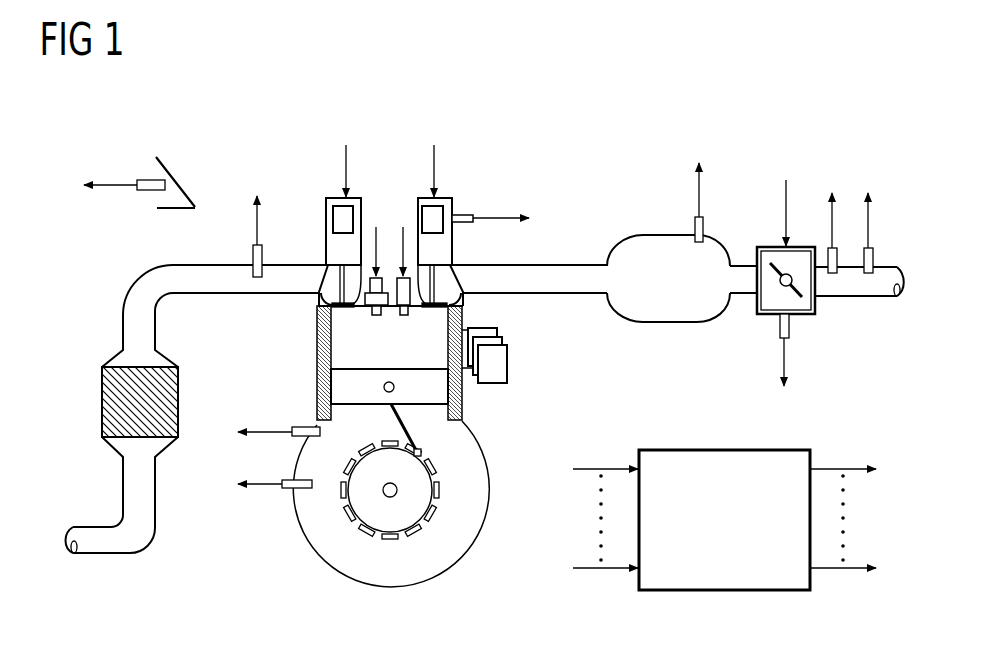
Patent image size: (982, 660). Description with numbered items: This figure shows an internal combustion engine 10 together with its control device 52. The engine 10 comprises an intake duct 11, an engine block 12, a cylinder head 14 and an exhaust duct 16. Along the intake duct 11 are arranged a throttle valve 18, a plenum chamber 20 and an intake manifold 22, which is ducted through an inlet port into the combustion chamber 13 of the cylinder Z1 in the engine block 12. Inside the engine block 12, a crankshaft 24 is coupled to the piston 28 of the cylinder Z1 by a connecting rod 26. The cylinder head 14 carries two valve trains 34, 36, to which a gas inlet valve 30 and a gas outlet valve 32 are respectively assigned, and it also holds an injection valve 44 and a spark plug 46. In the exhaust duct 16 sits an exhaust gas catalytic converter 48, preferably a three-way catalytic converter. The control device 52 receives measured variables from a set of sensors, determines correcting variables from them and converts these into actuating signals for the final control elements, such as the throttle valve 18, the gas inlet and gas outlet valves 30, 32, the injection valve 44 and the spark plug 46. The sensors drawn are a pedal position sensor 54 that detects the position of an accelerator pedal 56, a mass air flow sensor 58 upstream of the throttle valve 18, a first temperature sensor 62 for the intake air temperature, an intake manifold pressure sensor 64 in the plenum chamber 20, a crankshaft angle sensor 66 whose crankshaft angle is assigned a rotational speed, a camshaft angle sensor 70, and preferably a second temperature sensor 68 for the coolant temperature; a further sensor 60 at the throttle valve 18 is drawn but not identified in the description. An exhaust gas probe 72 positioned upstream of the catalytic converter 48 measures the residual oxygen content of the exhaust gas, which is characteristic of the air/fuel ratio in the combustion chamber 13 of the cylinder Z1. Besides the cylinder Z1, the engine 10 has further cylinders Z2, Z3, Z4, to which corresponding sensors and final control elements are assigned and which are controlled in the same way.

The internal combustion engine 10 is at (716, 111).
The intake duct 11 is at (677, 337).
The engine block 12 is at (310, 345).
The combustion chamber 13 is at (336, 340).
The cylinder head 14 is at (446, 146).
The exhaust duct 16 is at (137, 323).
The throttle valve 18 is at (770, 315).
The plenum chamber 20 is at (645, 240).
The intake manifold 22 is at (555, 266).
The crankshaft 24 is at (392, 498).
The connecting rod 26 is at (394, 412).
The piston 28 is at (417, 393).
The gas inlet valve 30 is at (432, 318).
The gas outlet valve 32 is at (331, 308).
The valve train 34 is at (331, 214).
The valve train 36 is at (421, 212).
The injection valve 44 is at (375, 318).
The spark plug 46 is at (401, 318).
The exhaust gas catalytic converter 48 is at (102, 393).
The control device 52 is at (724, 450).
The pedal position sensor 54 is at (148, 180).
The accelerator pedal 56 is at (180, 186).
The mass air flow sensor 58 is at (832, 274).
The throttle position sensor 60 is at (789, 330).
The first temperature sensor 62 is at (868, 274).
The intake manifold pressure sensor 64 is at (703, 225).
The crankshaft angle sensor 66 is at (300, 489).
The second temperature sensor 68 is at (300, 437).
The camshaft angle sensor 70 is at (462, 215).
The exhaust gas probe 72 is at (253, 258).
The cylinder Z1 is at (458, 385).
The further cylinder Z2 is at (506, 359).
The further cylinder Z3 is at (503, 340).
The further cylinder Z4 is at (493, 329).